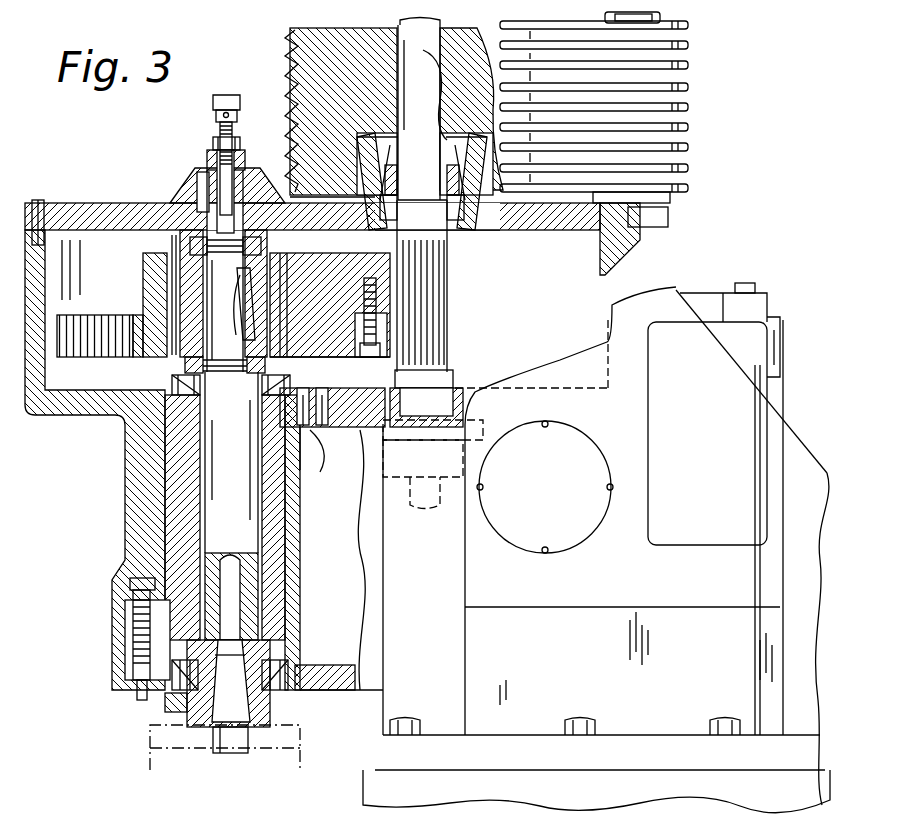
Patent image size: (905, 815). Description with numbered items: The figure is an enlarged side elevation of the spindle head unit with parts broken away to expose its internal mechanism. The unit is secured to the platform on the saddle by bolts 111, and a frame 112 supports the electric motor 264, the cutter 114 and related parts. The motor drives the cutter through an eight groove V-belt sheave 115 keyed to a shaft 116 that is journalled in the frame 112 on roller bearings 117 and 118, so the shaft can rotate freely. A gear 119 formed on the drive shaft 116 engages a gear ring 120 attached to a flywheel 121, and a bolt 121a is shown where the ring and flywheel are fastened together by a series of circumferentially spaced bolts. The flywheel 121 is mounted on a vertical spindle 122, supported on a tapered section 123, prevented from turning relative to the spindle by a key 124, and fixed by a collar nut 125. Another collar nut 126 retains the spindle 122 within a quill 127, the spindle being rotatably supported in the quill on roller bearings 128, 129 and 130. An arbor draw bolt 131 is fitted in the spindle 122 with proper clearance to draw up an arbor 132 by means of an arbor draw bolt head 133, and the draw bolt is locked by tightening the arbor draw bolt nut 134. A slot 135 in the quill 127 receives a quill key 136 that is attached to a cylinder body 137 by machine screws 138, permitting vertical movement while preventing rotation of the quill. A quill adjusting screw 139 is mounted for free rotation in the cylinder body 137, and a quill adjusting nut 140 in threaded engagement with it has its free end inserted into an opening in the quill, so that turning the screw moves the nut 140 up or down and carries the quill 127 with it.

The bolts 111 is at (590, 720).
The frame 112 is at (690, 283).
The cutter 114 is at (152, 756).
The eight groove V-belt sheave 115 is at (300, 45).
The shaft 116 is at (442, 24).
The roller bearing 117 is at (455, 217).
The roller bearing 118 is at (450, 392).
The gear 119 is at (432, 345).
The gear ring 120 is at (103, 357).
The flywheel 121 is at (328, 258).
The bolt 121a is at (370, 358).
The vertical spindle 122 is at (207, 198).
The tapered section 123 is at (198, 298).
The key 124 is at (248, 303).
The collar nut 125 is at (190, 246).
The collar nut 126 is at (268, 378).
The quill 127 is at (170, 465).
The roller bearing 128 is at (173, 393).
The roller bearing 129 is at (200, 508).
The roller bearing 130 is at (165, 705).
The arbor draw bolt 131 is at (215, 122).
The arbor 132 is at (212, 720).
The arbor draw bolt head 133 is at (240, 96).
The arbor draw bolt nut 134 is at (213, 140).
The slot 135 is at (300, 458).
The quill key 136 is at (307, 377).
The cylinder body 137 is at (133, 448).
The machine screws 138 is at (308, 440).
The quill adjusting screw 139 is at (140, 658).
The quill adjusting nut 140 is at (130, 636).
The motor 264 is at (705, 290).